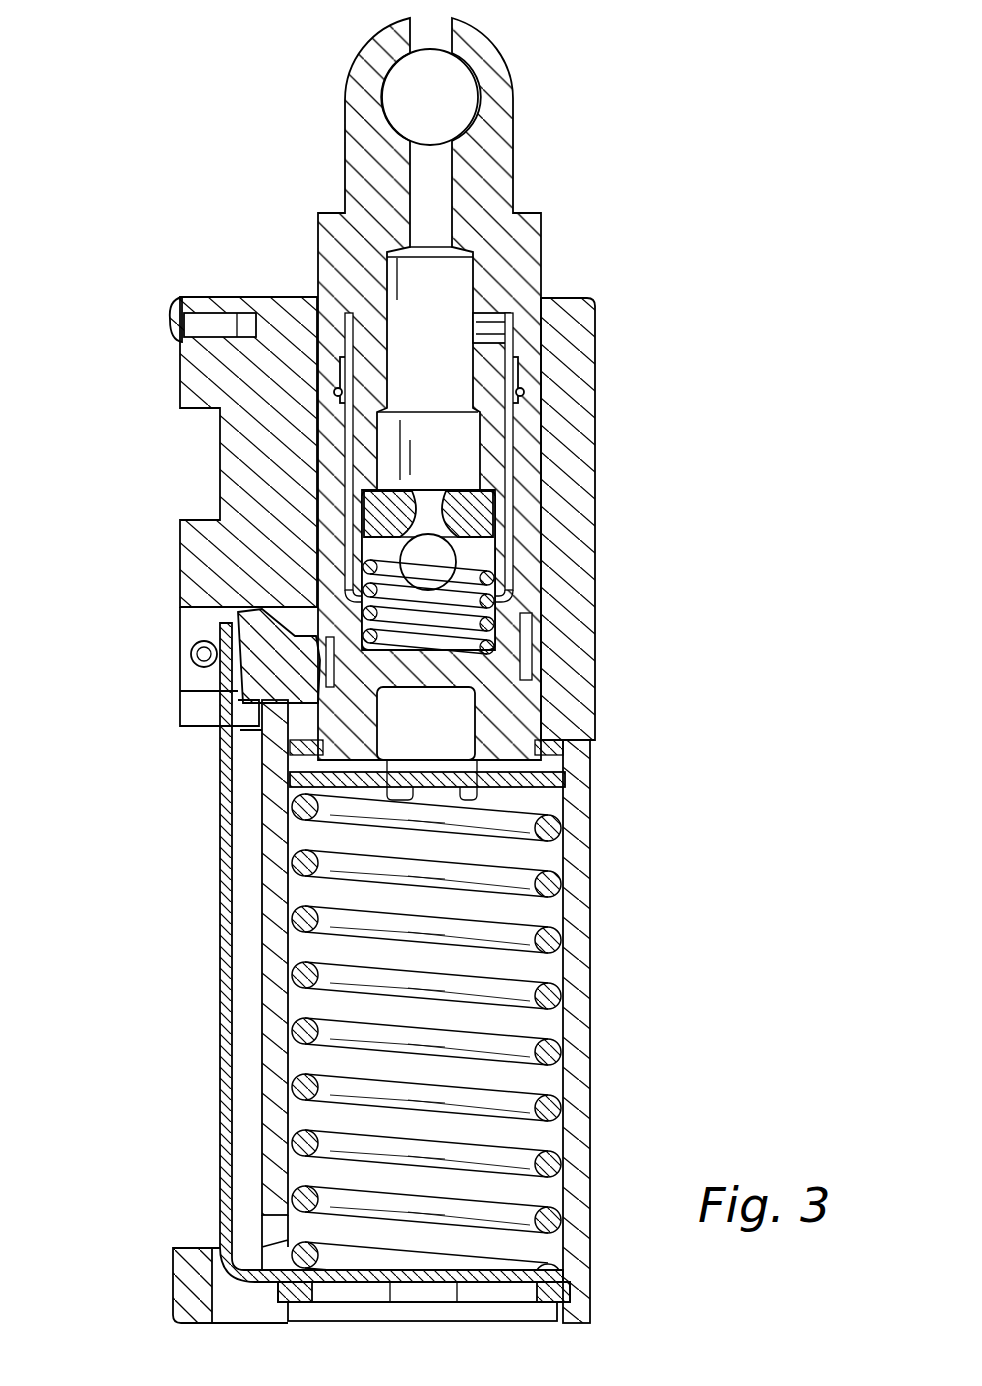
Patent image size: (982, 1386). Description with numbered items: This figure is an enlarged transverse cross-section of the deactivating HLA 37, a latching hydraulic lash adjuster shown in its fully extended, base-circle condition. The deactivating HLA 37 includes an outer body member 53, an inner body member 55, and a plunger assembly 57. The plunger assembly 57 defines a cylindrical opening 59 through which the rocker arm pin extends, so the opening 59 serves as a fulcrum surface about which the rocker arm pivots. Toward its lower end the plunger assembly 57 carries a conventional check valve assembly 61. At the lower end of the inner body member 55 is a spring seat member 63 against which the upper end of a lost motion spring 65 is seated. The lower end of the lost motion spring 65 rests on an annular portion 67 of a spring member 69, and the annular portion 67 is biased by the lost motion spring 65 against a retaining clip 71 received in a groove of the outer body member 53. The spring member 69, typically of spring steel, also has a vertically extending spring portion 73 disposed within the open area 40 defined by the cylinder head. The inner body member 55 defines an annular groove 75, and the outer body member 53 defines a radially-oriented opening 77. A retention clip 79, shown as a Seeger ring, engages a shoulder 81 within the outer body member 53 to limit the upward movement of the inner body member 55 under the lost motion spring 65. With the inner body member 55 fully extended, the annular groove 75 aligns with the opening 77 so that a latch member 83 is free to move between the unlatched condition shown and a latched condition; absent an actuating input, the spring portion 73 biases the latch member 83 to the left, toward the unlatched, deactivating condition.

The deactivating HLA 37 is at (695, 183).
The open area 40 is at (186, 985).
The outer body member 53 is at (578, 483).
The inner body member 55 is at (530, 603).
The plunger assembly 57 is at (327, 132).
The cylindrical opening 59 is at (443, 80).
The check valve assembly 61 is at (512, 577).
The spring seat member 63 is at (556, 769).
The lost motion spring 65 is at (558, 932).
The annular portion 67 is at (520, 1282).
The spring member 69 is at (218, 1188).
The retaining clip 71 is at (310, 1292).
The vertically extending spring portion 73 is at (225, 855).
The annular groove 75 is at (539, 668).
The radially-oriented opening 77 is at (181, 631).
The retention clip 79 is at (542, 739).
The shoulder 81 is at (288, 750).
The latch member 83 is at (190, 673).